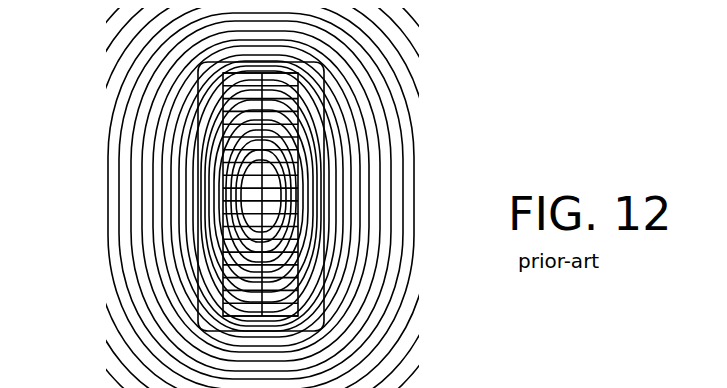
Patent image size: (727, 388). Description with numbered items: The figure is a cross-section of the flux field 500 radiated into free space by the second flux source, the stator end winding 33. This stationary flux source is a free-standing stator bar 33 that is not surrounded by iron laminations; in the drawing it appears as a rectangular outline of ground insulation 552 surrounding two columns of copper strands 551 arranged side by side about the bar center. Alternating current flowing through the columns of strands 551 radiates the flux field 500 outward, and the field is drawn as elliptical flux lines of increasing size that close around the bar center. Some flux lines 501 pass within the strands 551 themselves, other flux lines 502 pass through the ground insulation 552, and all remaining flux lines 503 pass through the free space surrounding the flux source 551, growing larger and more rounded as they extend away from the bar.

The flux field 500 is at (422, 152).
The stator end winding 33 is at (187, 184).
The copper strands 551 is at (300, 54).
The ground insulation 552 is at (293, 68).
The flux lines 501 is at (166, 194).
The flux lines 502 is at (178, 196).
The flux lines 503 is at (102, 196).